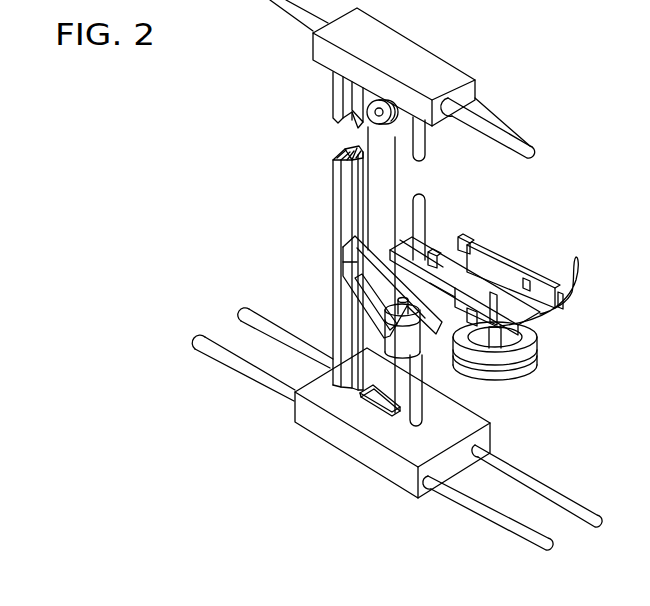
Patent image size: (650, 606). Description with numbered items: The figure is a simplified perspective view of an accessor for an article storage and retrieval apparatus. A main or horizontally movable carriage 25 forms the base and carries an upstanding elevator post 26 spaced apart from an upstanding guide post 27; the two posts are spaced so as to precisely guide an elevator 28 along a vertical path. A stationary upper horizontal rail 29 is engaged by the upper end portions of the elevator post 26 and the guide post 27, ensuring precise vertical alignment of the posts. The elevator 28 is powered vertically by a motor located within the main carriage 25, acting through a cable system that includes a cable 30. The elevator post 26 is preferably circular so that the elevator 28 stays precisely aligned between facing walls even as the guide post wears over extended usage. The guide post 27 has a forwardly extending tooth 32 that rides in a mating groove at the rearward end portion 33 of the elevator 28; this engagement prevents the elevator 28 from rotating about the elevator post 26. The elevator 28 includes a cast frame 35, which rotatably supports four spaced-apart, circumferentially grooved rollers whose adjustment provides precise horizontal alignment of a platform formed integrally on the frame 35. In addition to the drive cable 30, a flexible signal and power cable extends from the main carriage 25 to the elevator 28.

The main carriage 25 is at (301, 418).
The elevator post 26 is at (427, 211).
The guide post 27 is at (334, 156).
The elevator 28 is at (440, 358).
The upper horizontal rail 29 is at (299, 22).
The cable 30 is at (397, 186).
The tooth 32 is at (357, 196).
The rearward end portion 33 is at (345, 270).
The cast frame 35 is at (360, 257).